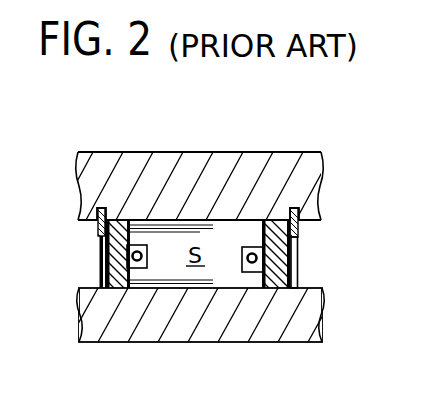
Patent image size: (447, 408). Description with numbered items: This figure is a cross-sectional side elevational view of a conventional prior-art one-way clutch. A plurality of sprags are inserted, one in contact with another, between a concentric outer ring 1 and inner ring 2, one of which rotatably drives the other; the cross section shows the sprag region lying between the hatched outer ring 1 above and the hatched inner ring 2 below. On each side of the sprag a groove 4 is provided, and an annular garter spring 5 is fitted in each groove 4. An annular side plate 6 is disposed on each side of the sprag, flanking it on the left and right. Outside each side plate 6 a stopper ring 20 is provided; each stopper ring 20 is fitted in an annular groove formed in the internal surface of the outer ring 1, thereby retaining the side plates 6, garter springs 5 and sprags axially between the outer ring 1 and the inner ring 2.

The outer ring 1 is at (161, 157).
The inner ring 2 is at (182, 332).
The groove 4 is at (138, 261).
The garter spring 5 is at (102, 275).
The side plate 6 is at (108, 254).
The stopper ring 20 is at (98, 225).